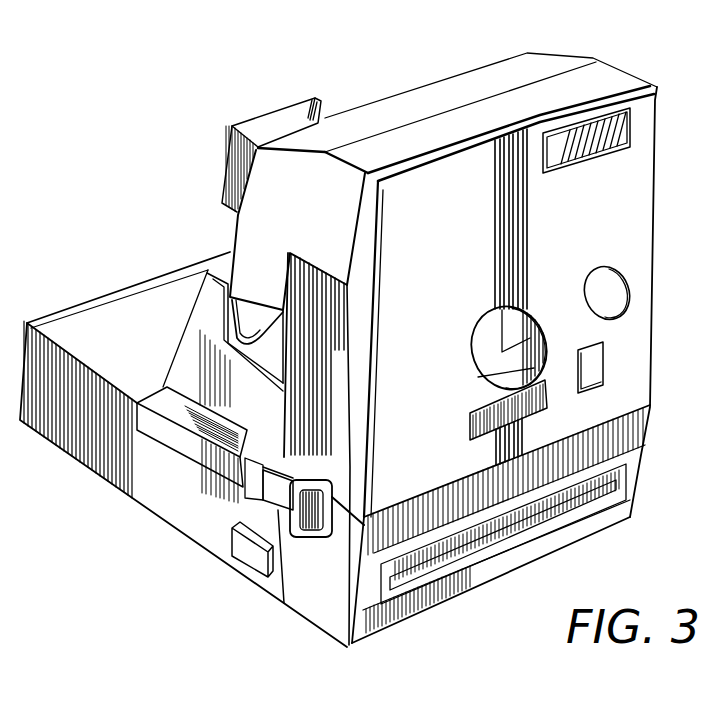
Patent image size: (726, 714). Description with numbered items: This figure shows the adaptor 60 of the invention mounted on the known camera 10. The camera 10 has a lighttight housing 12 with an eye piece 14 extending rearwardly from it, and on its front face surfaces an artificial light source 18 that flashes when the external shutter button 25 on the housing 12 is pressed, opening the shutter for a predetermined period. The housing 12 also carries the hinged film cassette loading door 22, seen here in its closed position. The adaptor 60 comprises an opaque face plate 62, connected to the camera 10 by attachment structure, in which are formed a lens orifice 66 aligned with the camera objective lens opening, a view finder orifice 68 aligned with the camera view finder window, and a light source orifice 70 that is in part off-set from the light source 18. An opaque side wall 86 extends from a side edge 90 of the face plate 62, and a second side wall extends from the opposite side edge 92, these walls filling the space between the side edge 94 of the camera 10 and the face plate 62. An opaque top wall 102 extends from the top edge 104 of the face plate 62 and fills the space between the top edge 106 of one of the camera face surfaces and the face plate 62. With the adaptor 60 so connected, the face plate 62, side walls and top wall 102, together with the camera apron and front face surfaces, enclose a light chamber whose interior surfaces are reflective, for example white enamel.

The camera 10 is at (486, 58).
The lighttight housing 12 is at (147, 473).
The eye piece 14 is at (263, 117).
The artificial light source 18 is at (570, 148).
The film cassette loading door 22 is at (303, 590).
The shutter button 25 is at (325, 520).
The adaptor 60 is at (640, 183).
The face plate 62 is at (635, 218).
The lens orifice 66 is at (481, 345).
The view finder orifice 68 is at (601, 284).
The light source orifice 70 is at (613, 140).
The side wall 86 is at (370, 418).
The side edge of face plate 90 is at (383, 273).
The side edge of face plate 92 is at (653, 320).
The side edge of camera 94 is at (293, 357).
The top wall 102 is at (473, 147).
The top edge of face plate 104 is at (616, 100).
The top edge of camera face surface 106 is at (447, 147).